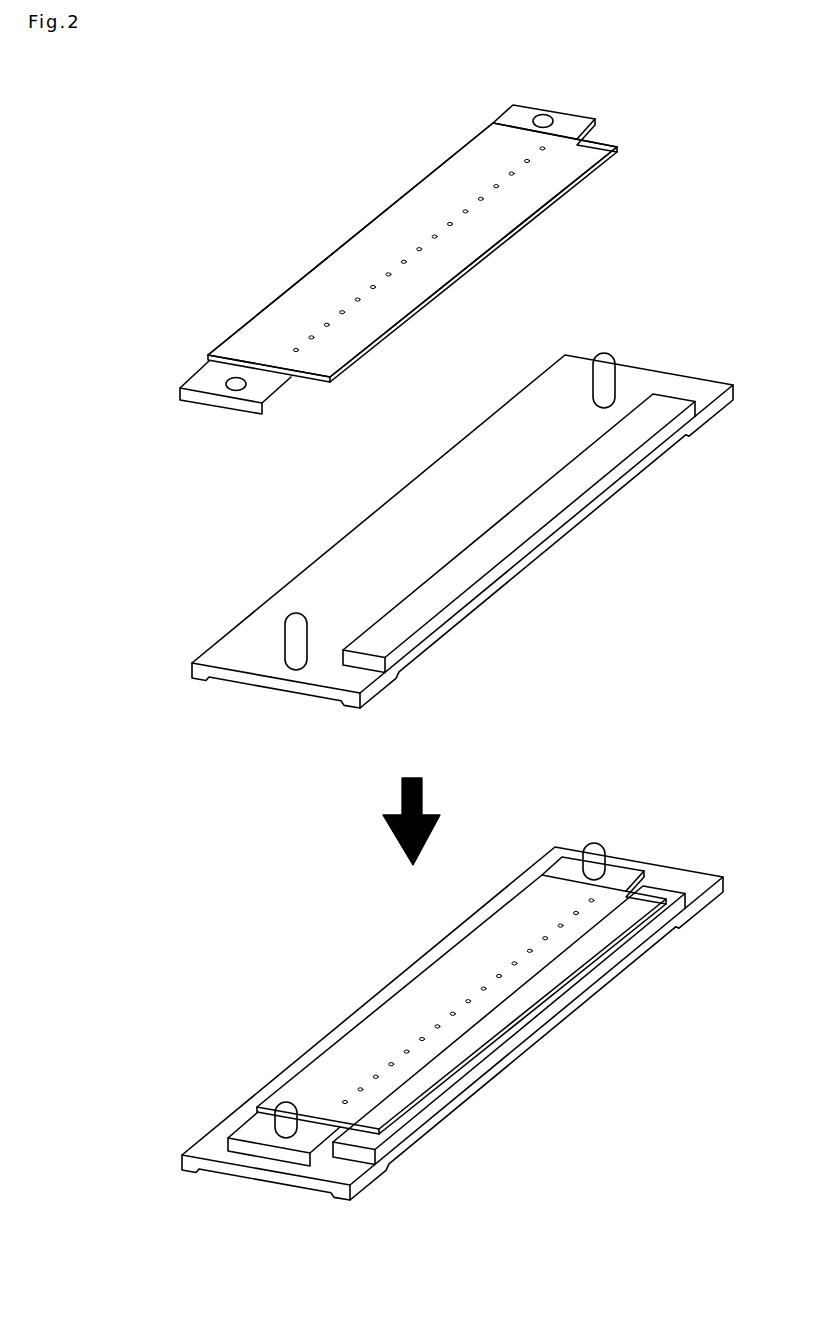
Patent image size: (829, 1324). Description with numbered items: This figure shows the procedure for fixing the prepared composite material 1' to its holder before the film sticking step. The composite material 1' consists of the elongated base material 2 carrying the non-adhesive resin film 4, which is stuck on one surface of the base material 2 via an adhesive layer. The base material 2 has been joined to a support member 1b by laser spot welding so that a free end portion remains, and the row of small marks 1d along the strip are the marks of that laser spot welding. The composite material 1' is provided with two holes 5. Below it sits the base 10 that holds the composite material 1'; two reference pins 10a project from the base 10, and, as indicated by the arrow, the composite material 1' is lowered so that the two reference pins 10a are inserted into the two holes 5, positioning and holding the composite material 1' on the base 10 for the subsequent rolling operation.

The composite material 1' is at (411, 261).
The base material 2 is at (373, 248).
The non-adhesive resin film 4 is at (278, 335).
The support member 1b is at (212, 383).
The mark of the laser spot welding 1d is at (526, 161).
The holes 5 is at (230, 382).
The base 10 is at (462, 504).
The reference pins 10a is at (609, 356).